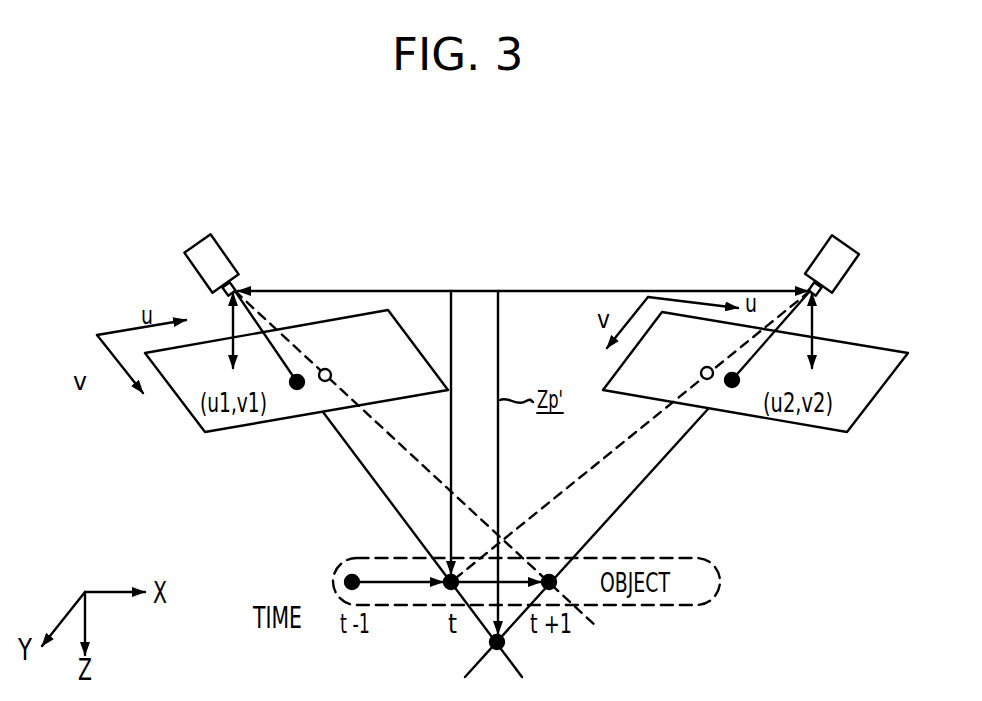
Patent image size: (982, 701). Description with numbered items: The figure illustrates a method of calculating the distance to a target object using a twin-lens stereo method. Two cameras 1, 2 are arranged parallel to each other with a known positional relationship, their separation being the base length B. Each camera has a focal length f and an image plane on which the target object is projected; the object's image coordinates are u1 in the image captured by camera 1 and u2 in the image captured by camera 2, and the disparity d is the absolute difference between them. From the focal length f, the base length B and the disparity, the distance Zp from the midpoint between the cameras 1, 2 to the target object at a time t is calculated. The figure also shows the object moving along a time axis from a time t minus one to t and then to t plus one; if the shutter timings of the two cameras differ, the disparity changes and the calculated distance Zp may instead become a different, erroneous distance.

The camera 1 is at (236, 262).
The camera 2 is at (807, 262).
The distance between the cameras B is at (523, 268).
The focal length f is at (230, 322).
The distance Zp is at (451, 438).